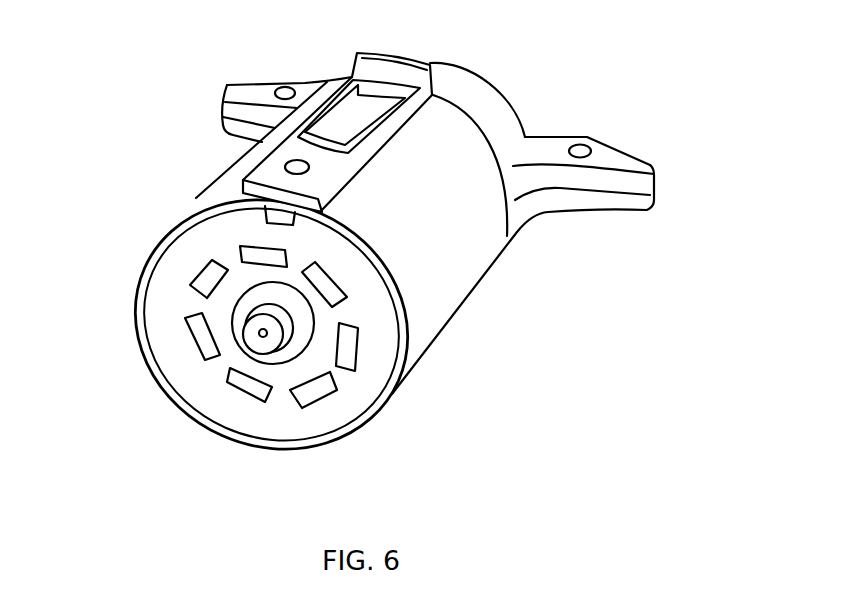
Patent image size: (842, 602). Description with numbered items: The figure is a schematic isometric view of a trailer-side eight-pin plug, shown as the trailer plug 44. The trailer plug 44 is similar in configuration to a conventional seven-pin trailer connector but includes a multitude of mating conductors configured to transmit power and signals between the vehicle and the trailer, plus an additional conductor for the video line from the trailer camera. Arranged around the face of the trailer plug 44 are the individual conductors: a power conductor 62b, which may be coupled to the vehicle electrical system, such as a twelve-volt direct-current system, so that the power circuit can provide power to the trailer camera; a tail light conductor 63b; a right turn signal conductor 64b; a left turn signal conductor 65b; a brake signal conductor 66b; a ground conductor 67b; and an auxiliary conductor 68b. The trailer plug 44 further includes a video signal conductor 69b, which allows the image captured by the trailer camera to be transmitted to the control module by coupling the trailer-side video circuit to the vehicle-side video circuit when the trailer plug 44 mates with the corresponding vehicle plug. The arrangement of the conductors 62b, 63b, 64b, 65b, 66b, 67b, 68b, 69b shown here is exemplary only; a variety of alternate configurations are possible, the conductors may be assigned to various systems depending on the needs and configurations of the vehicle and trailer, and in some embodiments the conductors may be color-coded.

The trailer plug 44 is at (156, 49).
The power conductor 62b is at (255, 257).
The tail light conductor 63b is at (330, 281).
The right turn signal conductor 64b is at (208, 281).
The left turn signal conductor 65b is at (345, 343).
The brake signal conductor 66b is at (205, 340).
The ground conductor 67b is at (322, 385).
The auxiliary conductor 68b is at (273, 340).
The video signal conductor 69b is at (250, 386).